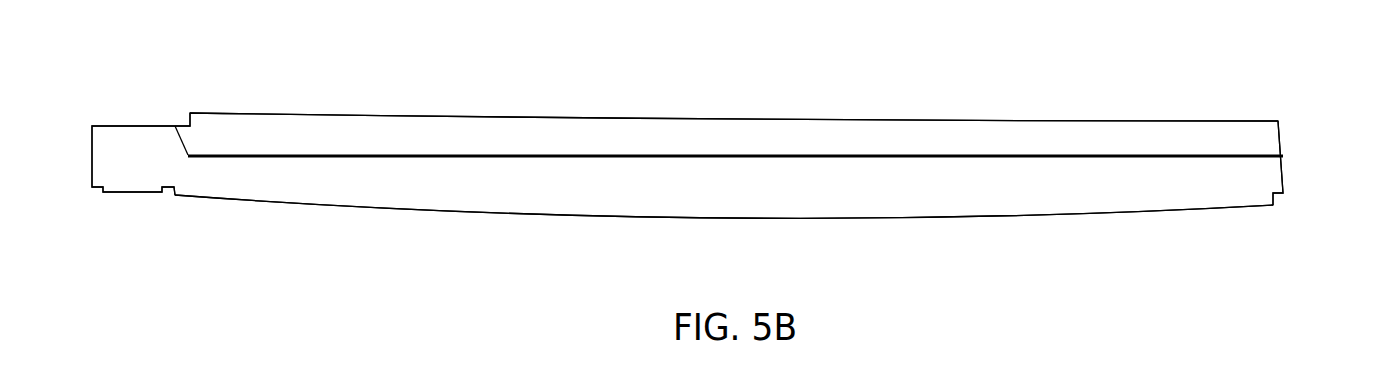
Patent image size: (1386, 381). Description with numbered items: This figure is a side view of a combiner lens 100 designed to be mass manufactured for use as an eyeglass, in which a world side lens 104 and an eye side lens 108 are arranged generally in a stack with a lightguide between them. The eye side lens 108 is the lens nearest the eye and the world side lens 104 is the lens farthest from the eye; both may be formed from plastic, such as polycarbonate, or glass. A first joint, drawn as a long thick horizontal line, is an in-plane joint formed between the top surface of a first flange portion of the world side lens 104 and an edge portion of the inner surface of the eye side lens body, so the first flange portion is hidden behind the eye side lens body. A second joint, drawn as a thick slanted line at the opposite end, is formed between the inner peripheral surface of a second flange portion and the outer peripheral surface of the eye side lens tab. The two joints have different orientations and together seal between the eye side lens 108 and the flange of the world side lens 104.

The combiner lens 100 is at (738, 90).
The world side lens 104 is at (902, 208).
The eye side lens 108 is at (541, 116).